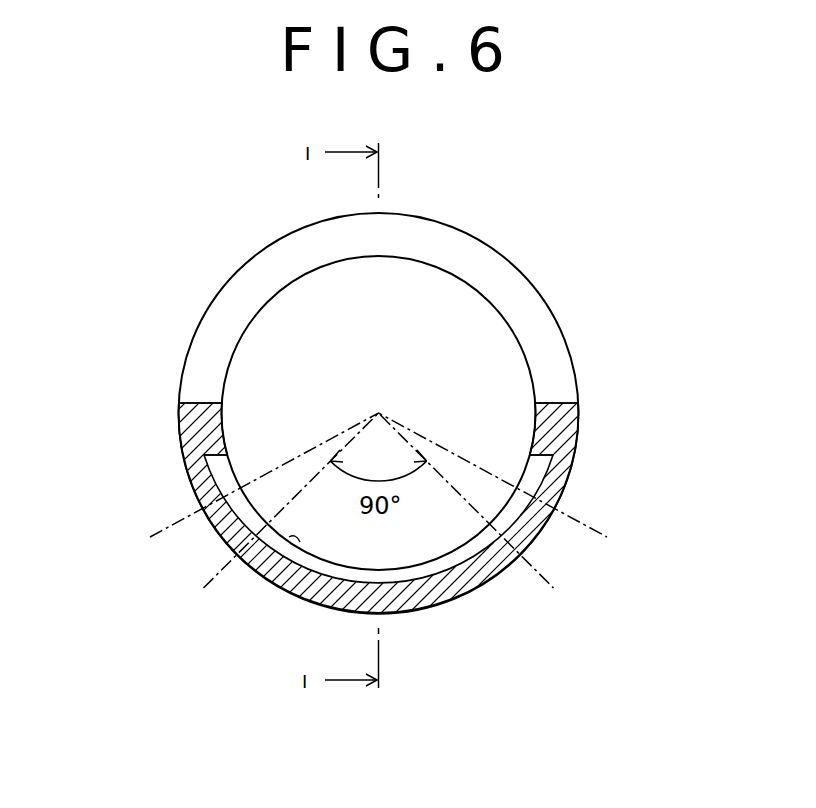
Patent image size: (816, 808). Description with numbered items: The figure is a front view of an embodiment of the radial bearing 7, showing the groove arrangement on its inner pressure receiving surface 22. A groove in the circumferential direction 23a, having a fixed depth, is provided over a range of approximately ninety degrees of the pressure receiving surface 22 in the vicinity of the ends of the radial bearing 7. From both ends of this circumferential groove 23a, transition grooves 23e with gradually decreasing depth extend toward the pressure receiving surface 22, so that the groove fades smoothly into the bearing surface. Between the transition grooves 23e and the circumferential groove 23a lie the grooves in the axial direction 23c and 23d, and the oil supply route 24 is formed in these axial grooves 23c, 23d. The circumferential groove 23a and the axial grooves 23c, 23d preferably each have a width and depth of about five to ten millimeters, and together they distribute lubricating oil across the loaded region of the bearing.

The radial bearing 7 is at (541, 290).
The pressure receiving surface 22 is at (271, 588).
The groove in the circumferential direction 23a is at (438, 584).
The groove in the axial direction 23c is at (248, 487).
The groove in the axial direction 23d is at (520, 490).
The transition groove 23e is at (178, 433).
The oil supply route 24 is at (186, 493).